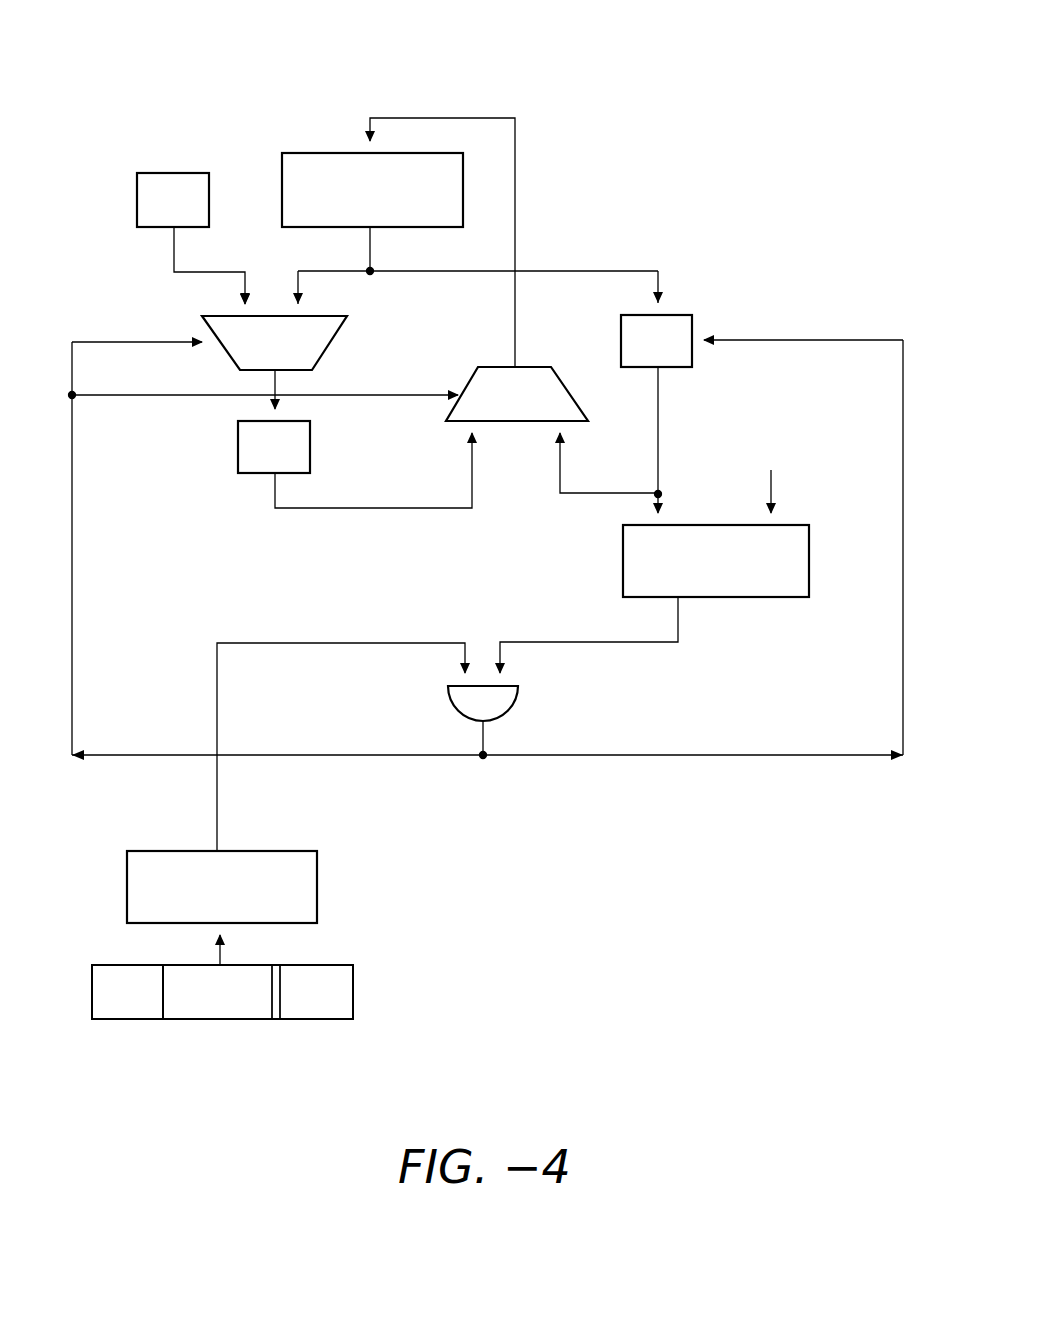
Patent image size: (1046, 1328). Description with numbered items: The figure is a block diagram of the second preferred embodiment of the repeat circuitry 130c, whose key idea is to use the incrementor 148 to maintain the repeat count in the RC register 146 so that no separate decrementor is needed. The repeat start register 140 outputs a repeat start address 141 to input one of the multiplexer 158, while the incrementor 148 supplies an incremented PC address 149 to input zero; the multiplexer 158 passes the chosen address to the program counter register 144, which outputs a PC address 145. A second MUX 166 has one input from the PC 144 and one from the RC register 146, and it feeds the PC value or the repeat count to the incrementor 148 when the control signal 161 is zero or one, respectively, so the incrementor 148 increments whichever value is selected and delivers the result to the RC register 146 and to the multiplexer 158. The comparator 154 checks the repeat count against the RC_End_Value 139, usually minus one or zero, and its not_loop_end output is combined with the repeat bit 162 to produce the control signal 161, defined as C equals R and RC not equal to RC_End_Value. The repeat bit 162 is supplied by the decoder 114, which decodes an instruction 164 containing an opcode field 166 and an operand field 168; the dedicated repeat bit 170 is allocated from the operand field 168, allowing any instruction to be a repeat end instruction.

The repeat circuitry 130c is at (786, 84).
The repeat start register 140 is at (160, 173).
The repeat start address 141 is at (174, 253).
The incrementor 148 is at (337, 153).
The incremented PC address 149 is at (372, 254).
The multiplexer 158 is at (333, 350).
The program counter register 144 is at (311, 452).
The PC address 145 is at (327, 508).
The second multiplexer 166 is at (517, 421).
The repeat counter register 146 is at (675, 315).
The repeat count end value 139 is at (773, 505).
The comparator 154 is at (809, 552).
The repeat bit 162 is at (421, 612).
The instruction 164 is at (520, 706).
The control signal 161 is at (300, 803).
The decoder 114 is at (222, 887).
The operand field 168 is at (222, 1019).
The repeat bit 170 is at (280, 1019).